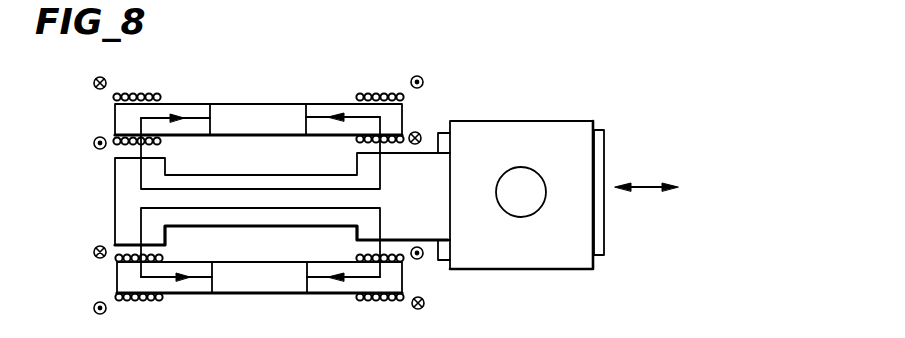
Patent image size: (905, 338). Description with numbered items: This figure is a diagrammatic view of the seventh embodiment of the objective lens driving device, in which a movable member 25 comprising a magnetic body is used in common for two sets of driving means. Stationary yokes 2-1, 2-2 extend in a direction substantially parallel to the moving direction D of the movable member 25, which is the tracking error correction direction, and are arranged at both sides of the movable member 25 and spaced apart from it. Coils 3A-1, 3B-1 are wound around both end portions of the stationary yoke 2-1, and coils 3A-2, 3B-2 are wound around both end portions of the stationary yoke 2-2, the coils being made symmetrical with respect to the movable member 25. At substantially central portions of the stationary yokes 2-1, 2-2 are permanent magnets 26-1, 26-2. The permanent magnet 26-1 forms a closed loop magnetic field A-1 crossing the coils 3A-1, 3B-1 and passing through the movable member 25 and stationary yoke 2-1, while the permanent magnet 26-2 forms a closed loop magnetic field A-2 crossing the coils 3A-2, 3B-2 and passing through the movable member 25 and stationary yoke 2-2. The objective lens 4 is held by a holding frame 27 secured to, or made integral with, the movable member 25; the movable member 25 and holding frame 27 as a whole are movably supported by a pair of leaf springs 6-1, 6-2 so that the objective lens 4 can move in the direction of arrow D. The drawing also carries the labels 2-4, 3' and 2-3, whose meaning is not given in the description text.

The yoke portion 2-4 is at (213, 17).
The coil assembly 3' is at (281, 17).
The yoke portion 2-3 is at (343, 17).
The coil 3A-1 is at (151, 95).
The stationary yoke 2-1 is at (193, 113).
The permanent magnet 26-1 is at (255, 118).
The closed loop magnetic field A-1 is at (323, 116).
The coil 3B-1 is at (380, 95).
The leaf spring 6-2 is at (441, 133).
The holding frame 27 is at (535, 131).
The leaf spring 6-1 is at (598, 165).
The moving direction D is at (649, 190).
The objective lens 4 is at (525, 208).
The movable member 25 is at (286, 227).
The coil 3A-2 is at (140, 302).
The closed loop magnetic field A-2 is at (188, 281).
The permanent magnet 26-2 is at (270, 282).
The stationary yoke 2-2 is at (340, 294).
The coil 3B-2 is at (407, 291).